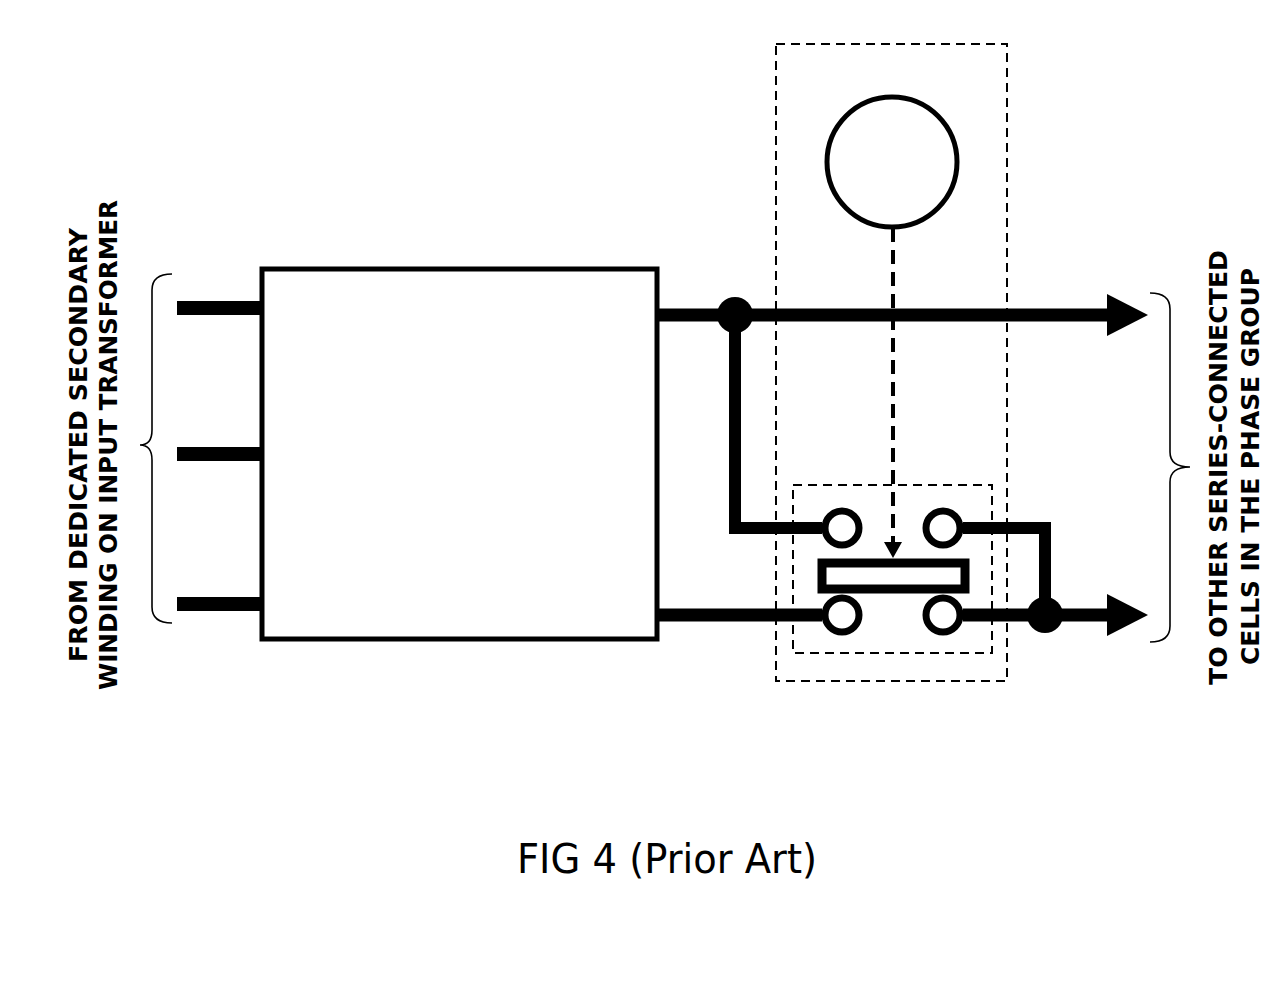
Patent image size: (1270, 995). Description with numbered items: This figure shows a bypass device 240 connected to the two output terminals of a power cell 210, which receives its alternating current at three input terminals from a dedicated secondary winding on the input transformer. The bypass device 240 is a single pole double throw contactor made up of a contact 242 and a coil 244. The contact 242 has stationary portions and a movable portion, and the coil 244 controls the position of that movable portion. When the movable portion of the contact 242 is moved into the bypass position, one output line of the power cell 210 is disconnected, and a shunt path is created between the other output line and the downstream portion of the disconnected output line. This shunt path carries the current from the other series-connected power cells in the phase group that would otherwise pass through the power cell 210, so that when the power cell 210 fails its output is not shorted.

The power cell 210 is at (410, 640).
The bypass device 240 is at (1008, 190).
The contact 242 is at (913, 654).
The coil 244 is at (842, 118).